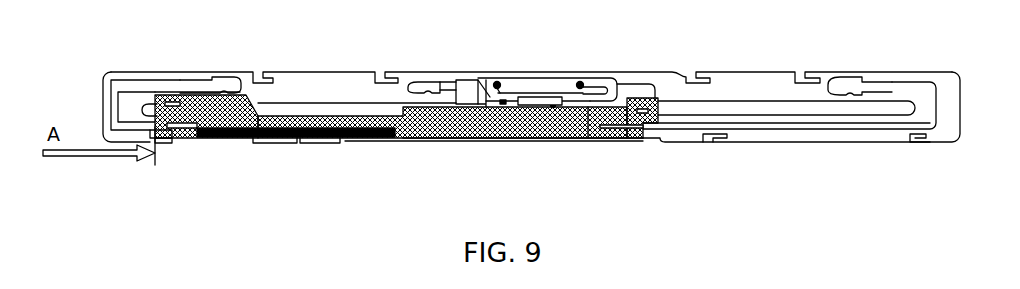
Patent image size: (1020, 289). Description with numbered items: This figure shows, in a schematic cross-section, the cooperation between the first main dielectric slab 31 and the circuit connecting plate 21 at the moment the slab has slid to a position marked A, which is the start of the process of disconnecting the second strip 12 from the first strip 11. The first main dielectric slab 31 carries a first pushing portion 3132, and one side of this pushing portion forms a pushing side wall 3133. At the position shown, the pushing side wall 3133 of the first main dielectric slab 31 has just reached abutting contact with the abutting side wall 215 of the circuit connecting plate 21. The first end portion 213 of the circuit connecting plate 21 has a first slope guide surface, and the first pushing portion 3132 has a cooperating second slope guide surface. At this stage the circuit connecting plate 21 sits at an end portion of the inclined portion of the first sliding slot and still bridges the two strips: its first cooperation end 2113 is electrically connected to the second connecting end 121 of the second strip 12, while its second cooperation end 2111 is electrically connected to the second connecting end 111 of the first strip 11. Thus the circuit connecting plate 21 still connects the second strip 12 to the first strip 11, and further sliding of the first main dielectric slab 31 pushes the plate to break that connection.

The first strip 11 is at (140, 78).
The second strip 12 is at (880, 75).
The circuit connecting plate 21 is at (503, 77).
The first main dielectric slab 31 is at (333, 138).
The second connecting end 111 is at (467, 138).
The second connecting end 121 is at (553, 107).
The first end portion 213 is at (597, 107).
The abutting side wall 215 is at (492, 82).
The second cooperation end 2111 is at (462, 80).
The first cooperation end 2113 is at (525, 102).
The first pushing portion 3132 is at (405, 138).
The pushing side wall 3133 is at (250, 98).